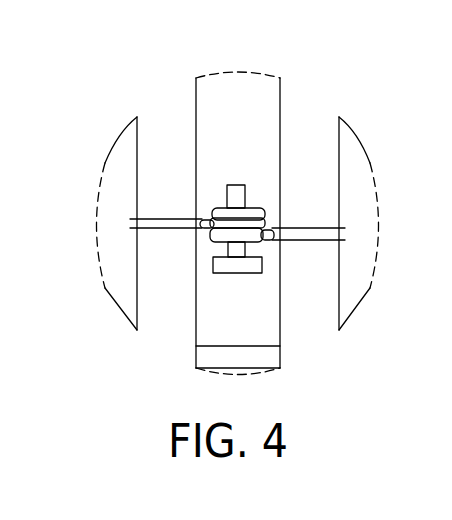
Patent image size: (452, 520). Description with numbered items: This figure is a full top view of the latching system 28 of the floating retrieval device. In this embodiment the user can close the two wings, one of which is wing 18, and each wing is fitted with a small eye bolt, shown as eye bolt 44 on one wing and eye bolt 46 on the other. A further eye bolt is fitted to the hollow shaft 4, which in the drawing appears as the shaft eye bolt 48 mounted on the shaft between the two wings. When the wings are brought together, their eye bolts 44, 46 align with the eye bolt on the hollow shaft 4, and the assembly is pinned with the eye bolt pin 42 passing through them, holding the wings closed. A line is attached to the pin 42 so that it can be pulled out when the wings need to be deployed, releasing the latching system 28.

The hollow shaft 4 is at (196, 84).
The wing 18 is at (110, 290).
The latching system 28 is at (271, 204).
The eye bolt pin 42 is at (263, 160).
The eye bolt 44 is at (175, 226).
The eye bolt 46 is at (312, 242).
The bolt fastener 48 is at (213, 207).